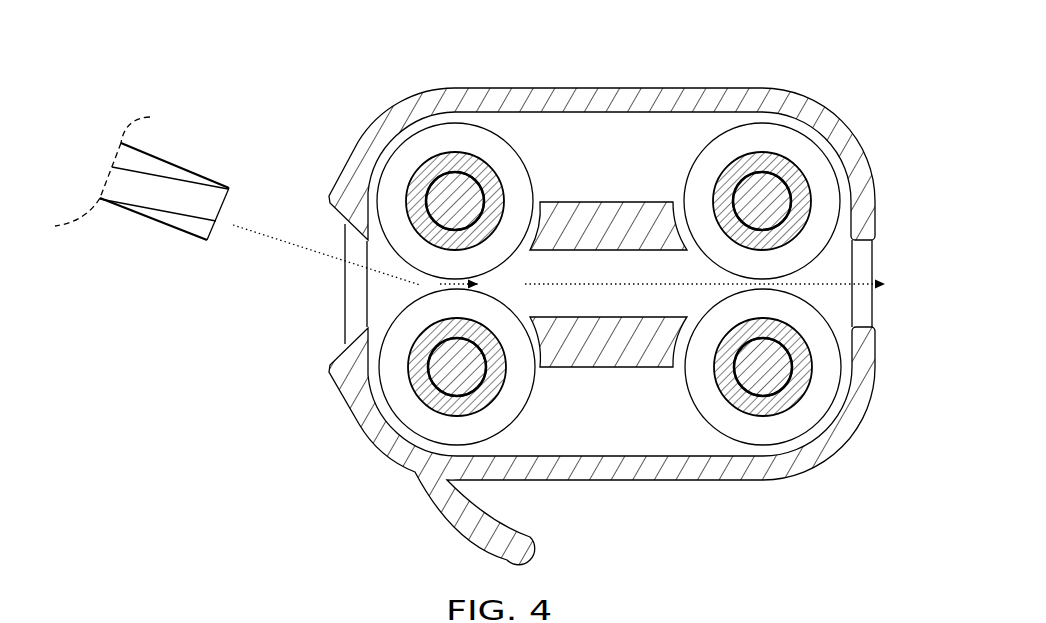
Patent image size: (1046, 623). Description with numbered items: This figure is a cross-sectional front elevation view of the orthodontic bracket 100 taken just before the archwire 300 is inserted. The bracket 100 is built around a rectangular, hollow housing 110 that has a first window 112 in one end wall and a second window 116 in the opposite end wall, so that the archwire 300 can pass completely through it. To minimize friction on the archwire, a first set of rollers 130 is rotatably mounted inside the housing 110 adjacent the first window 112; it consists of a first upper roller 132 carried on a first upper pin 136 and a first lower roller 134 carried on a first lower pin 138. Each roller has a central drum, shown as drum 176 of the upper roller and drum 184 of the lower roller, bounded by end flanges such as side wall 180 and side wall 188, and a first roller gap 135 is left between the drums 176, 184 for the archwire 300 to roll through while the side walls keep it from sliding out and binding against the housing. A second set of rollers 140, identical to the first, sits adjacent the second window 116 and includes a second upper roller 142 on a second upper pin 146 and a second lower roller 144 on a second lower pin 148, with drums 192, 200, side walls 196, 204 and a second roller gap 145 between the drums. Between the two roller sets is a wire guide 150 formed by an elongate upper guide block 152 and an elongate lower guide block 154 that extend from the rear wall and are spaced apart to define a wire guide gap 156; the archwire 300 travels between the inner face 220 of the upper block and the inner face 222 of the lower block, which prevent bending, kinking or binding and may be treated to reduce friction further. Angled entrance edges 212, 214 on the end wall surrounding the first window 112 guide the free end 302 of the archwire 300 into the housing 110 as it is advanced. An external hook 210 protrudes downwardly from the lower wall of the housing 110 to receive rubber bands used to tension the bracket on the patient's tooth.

The orthodontic bracket 100 is at (258, 52).
The housing 110 is at (568, 78).
The first window 112 is at (356, 315).
The second window 116 is at (862, 260).
The first set of rollers 130 is at (381, 146).
The first upper roller 132 is at (443, 140).
The first lower roller 134 is at (427, 425).
The first roller gap 135 is at (418, 288).
The first upper pin 136 is at (428, 168).
The first lower pin 138 is at (425, 425).
The second set of rollers 140 is at (850, 197).
The second upper roller 142 is at (812, 158).
The second lower roller 144 is at (770, 430).
The second roller gap 145 is at (780, 302).
The second upper pin 146 is at (775, 175).
The second lower pin 148 is at (780, 372).
The wire guide 150 is at (740, 123).
The upper guide block 152 is at (675, 176).
The lower guide block 154 is at (635, 368).
The wire guide gap 156 is at (592, 258).
The drum 176 is at (435, 185).
The side wall 180 is at (465, 123).
The drum 184 is at (410, 428).
The side wall 188 is at (500, 425).
The drum 192 is at (810, 193).
The side wall 196 is at (847, 160).
The drum 200 is at (793, 405).
The side wall 204 is at (800, 433).
The hook 210 is at (467, 533).
The angled entrance edge 212 is at (328, 210).
The angled entrance edge 214 is at (330, 350).
The inner face 220 is at (609, 256).
The inner face 222 is at (593, 322).
The archwire 300 is at (140, 215).
The free end 302 is at (198, 225).